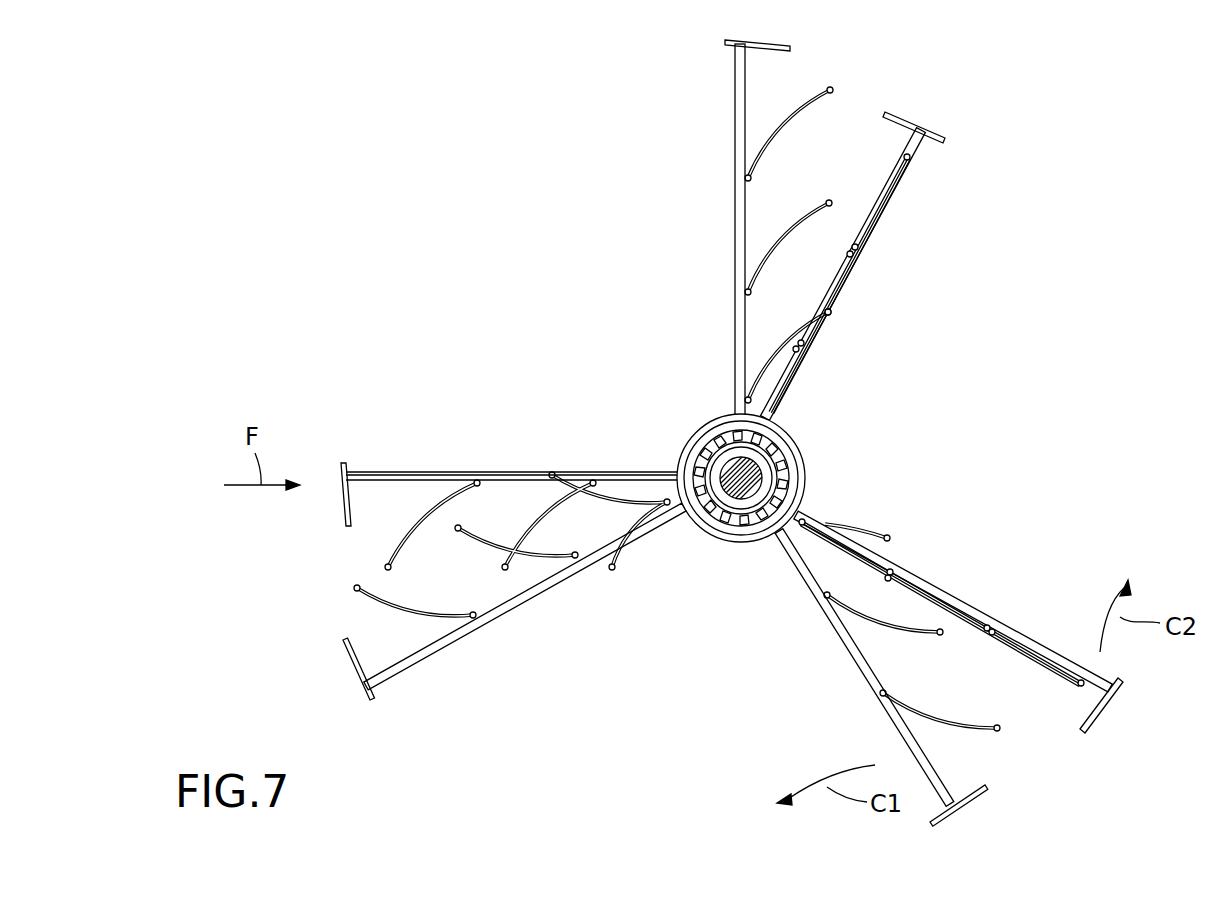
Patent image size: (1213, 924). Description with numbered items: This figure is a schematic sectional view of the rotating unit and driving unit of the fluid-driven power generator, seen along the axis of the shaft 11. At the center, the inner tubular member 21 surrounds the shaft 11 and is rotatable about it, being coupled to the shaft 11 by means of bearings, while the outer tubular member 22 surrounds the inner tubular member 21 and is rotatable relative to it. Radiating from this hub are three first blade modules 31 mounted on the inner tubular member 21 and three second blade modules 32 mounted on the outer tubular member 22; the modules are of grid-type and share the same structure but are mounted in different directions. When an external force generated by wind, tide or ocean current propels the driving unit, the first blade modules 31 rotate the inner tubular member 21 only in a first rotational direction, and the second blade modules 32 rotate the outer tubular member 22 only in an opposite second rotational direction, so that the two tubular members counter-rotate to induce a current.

The shaft 11 is at (735, 483).
The inner tubular member 21 is at (760, 505).
The outer tubular member 22 is at (807, 473).
The first blade modules 31 is at (917, 123).
The second blade modules 32 is at (787, 48).